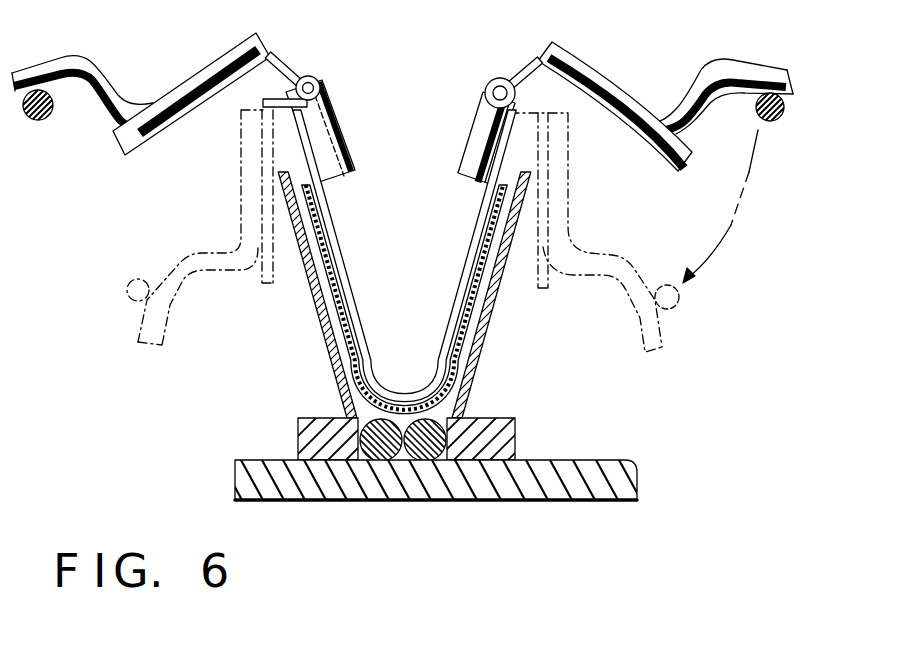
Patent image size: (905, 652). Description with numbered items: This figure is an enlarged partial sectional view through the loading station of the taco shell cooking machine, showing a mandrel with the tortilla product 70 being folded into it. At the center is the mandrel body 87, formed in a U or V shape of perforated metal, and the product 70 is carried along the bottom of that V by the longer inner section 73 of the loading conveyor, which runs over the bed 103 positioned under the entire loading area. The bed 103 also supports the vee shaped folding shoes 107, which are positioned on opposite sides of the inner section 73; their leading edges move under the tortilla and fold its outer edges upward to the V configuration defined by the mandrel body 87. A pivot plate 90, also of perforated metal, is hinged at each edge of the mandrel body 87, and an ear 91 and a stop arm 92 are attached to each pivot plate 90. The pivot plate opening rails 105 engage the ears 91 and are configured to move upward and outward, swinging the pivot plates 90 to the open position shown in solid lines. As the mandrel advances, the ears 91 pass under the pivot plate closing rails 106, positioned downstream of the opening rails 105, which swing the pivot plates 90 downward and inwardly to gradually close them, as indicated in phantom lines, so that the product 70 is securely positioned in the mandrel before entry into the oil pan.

The product 70 is at (463, 320).
The longer inner section 73 is at (418, 447).
The mandrel body 87 is at (338, 256).
The pivot plate 90 is at (606, 106).
The ear 91 is at (771, 66).
The stop arm 92 is at (476, 132).
The bed 103 is at (610, 493).
The pivot plate opening rails 105 is at (777, 121).
The pivot plate closing rails 106 is at (681, 293).
The folding shoes 107 is at (325, 418).